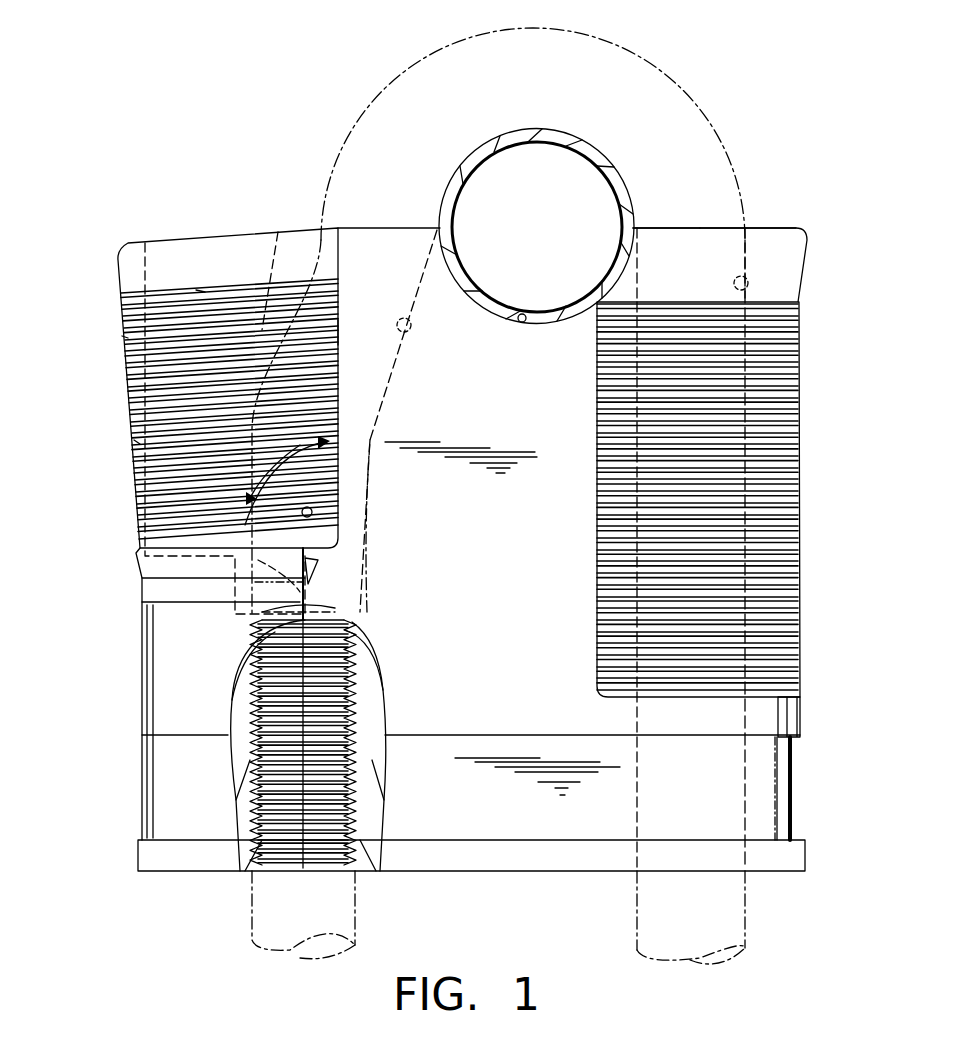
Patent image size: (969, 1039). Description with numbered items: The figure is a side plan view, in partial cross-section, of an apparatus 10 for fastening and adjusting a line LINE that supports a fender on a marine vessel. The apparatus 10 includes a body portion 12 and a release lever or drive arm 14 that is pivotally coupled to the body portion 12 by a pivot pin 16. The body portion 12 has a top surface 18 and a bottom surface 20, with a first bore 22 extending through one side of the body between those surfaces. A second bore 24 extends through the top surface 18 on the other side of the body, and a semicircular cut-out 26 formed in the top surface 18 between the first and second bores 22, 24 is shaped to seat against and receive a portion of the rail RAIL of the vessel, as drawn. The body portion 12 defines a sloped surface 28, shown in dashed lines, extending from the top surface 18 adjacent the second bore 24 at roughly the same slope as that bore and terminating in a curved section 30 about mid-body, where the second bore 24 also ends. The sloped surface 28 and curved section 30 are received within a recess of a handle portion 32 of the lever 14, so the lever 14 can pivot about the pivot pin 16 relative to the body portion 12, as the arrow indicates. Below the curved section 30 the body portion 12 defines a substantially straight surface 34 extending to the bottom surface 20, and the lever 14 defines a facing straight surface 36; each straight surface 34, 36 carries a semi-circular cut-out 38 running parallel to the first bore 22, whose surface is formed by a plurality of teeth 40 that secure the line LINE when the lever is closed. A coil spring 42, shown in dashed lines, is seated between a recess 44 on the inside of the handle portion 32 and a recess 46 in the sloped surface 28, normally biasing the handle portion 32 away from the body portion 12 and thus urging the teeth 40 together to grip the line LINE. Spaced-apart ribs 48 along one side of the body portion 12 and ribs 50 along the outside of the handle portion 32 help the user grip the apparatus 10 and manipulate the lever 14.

The apparatus 10 is at (766, 190).
The body portion 12 is at (819, 242).
The release lever or drive arm 14 is at (118, 250).
The pivot pin 16 is at (313, 509).
The top surface 18 is at (670, 228).
The bottom surface 20 is at (566, 871).
The first bore 22 is at (749, 287).
The second bore 24 is at (411, 329).
The semicircular cut-out 26 is at (523, 323).
The sloped surface 28 is at (266, 262).
The curved section 30 is at (304, 582).
The handle portion 32 is at (338, 333).
The straight surface 34 is at (372, 643).
The straight surface 36 is at (262, 612).
The semi-circular cut-out 38 is at (334, 871).
The teeth 40 is at (250, 780).
The coil spring 42 is at (196, 290).
The recess 44 is at (122, 336).
The recess 46 is at (300, 305).
The ribs 48 is at (800, 392).
The ribs 50 is at (134, 440).
The rail RAIL is at (604, 160).
The line LINE is at (735, 142).